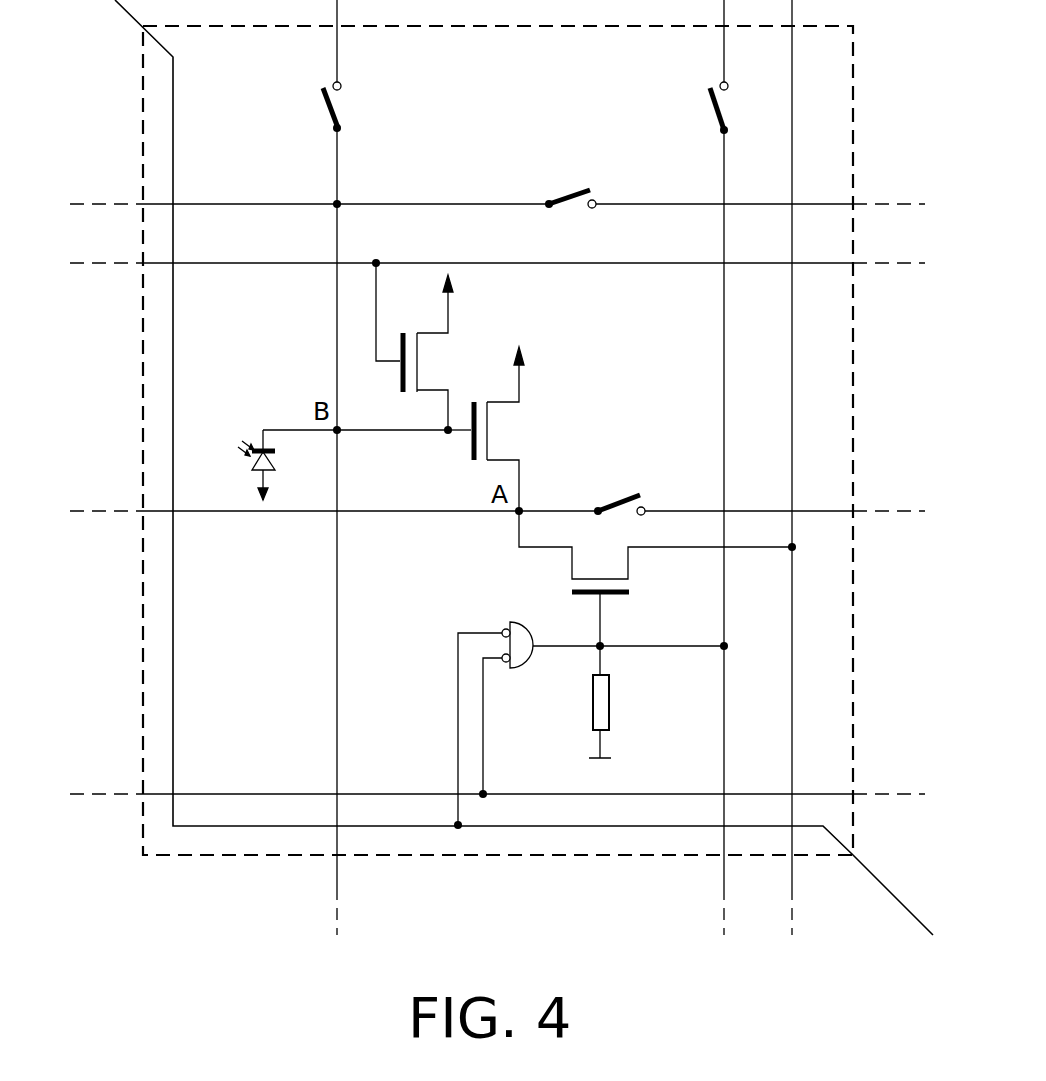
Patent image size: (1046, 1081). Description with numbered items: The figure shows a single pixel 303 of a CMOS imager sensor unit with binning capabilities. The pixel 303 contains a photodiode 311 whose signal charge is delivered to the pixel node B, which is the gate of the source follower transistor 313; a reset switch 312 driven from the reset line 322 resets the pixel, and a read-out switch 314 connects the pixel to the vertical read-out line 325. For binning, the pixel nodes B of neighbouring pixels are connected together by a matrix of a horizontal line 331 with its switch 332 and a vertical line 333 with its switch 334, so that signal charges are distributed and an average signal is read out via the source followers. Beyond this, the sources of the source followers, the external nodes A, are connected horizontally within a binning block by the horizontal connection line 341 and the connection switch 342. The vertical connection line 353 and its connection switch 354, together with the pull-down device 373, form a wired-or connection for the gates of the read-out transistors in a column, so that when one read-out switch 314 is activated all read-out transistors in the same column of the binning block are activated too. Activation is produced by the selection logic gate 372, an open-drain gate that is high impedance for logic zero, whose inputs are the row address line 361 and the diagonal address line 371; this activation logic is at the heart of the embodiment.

The pixel 303 is at (150, 146).
The photodiode 311 is at (272, 465).
The reset switch 312 is at (418, 360).
The source follower transistor 313 is at (489, 430).
The read-out switch 314 is at (600, 575).
The reset line 322 is at (237, 265).
The read-out line 325 is at (792, 115).
The horizontal line 331 is at (885, 204).
The switch 332 is at (567, 190).
The vertical line 333 is at (337, 47).
The switch 334 is at (325, 109).
The horizontal connection line 341 is at (888, 511).
The connection switch 342 is at (616, 496).
The vertical connection line 353 is at (724, 49).
The connection switch 354 is at (710, 110).
The row address line 361 is at (232, 794).
The diagonal address line 371 is at (173, 82).
The logic gate 372 is at (525, 670).
The pull-down device 373 is at (609, 705).